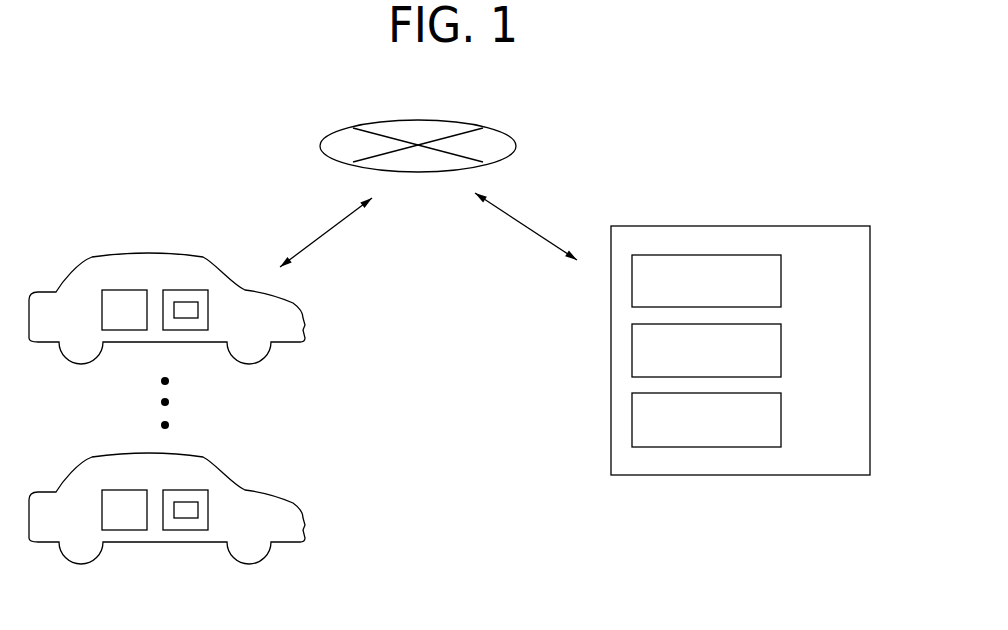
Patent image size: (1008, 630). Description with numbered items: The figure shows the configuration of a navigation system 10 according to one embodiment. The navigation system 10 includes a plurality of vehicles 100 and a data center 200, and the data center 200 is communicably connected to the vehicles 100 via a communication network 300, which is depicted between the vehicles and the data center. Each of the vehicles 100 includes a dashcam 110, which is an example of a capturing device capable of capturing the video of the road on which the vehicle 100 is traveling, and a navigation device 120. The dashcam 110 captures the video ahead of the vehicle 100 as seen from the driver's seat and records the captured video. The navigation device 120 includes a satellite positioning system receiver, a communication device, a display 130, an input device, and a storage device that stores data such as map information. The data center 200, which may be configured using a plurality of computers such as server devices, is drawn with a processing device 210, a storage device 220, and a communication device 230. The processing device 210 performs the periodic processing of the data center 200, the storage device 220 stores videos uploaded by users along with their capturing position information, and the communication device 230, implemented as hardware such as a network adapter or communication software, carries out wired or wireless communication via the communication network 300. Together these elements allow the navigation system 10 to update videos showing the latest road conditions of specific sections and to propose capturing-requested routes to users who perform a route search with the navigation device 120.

The navigation system 10 is at (609, 178).
The vehicle 100 is at (74, 268).
The dashcam 110 is at (121, 289).
The navigation device 120 is at (193, 289).
The display 130 is at (190, 319).
The data center 200 is at (812, 226).
The processing device 210 is at (781, 281).
The storage device 220 is at (781, 350).
The communication device 230 is at (781, 420).
The communication network 300 is at (420, 120).